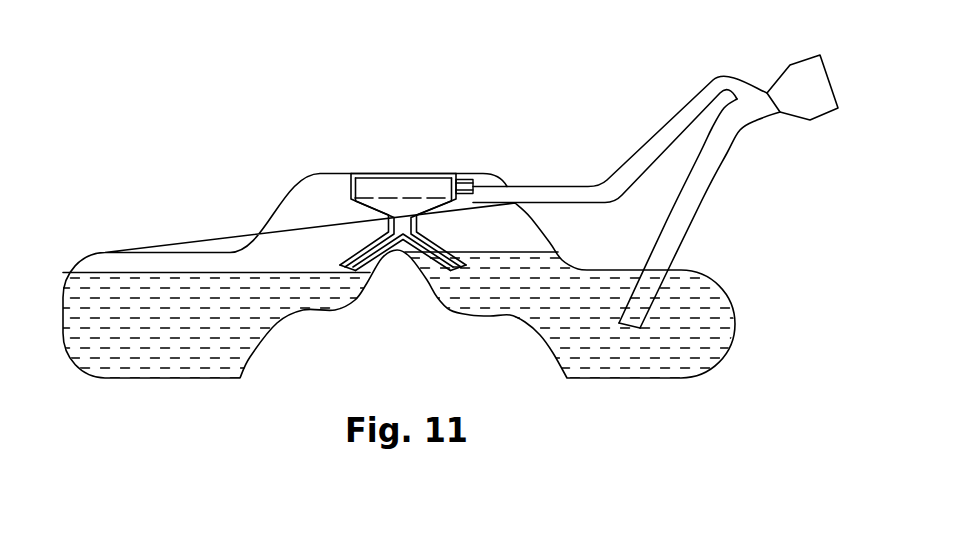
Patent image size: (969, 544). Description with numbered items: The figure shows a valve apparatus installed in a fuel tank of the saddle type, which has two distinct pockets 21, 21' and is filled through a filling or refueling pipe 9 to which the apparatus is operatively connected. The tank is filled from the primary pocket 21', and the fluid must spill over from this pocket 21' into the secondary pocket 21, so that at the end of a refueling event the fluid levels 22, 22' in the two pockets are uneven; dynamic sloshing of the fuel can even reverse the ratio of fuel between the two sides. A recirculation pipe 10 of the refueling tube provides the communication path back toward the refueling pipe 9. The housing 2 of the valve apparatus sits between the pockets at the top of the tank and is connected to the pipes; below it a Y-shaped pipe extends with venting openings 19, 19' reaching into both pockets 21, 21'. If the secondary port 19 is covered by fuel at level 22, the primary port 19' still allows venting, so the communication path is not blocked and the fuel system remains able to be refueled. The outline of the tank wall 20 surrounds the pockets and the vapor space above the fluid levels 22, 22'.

The housing 2 is at (395, 226).
The refueling pipe 9 is at (641, 132).
The recirculation pipe 10 is at (736, 150).
The secondary port 19 is at (385, 226).
The primary port 19' is at (440, 302).
The container 20 is at (200, 230).
The secondary pocket 21 is at (220, 329).
The primary pocket 21' is at (570, 318).
The fluid level in secondary pocket 22 is at (296, 249).
The fluid level in primary pocket 22' is at (498, 227).